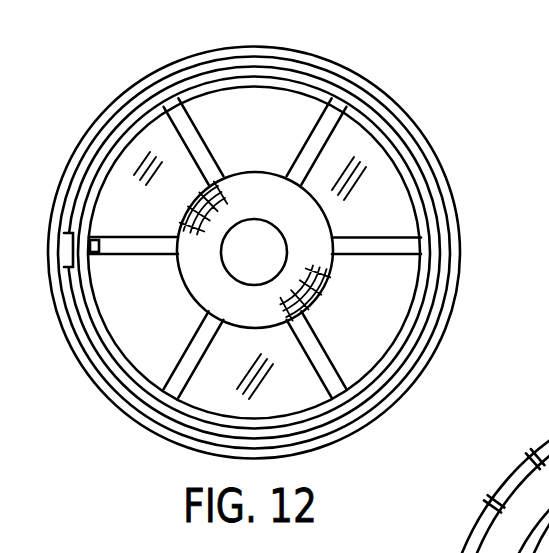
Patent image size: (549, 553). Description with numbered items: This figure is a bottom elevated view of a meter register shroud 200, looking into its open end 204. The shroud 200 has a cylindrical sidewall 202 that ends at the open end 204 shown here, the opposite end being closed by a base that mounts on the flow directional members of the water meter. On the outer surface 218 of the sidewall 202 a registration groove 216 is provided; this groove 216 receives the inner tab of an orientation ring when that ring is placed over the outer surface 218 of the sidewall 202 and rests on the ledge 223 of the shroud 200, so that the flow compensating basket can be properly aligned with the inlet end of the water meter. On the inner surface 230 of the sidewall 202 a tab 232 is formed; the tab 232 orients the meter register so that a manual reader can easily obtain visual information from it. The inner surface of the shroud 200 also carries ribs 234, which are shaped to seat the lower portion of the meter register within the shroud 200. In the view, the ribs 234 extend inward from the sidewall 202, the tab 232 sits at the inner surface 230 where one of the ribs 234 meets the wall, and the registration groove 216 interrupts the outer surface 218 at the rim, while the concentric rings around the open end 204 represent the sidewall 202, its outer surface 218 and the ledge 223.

The meter register shroud 200 is at (409, 97).
The cylindrical sidewall 202 is at (436, 192).
The open end 204 is at (298, 106).
The registration groove 216 is at (72, 241).
The outer surface 218 is at (53, 301).
The ledge 223 is at (397, 163).
The inner surface 230 is at (234, 91).
The tab 232 is at (102, 238).
The ribs 234 is at (306, 149).